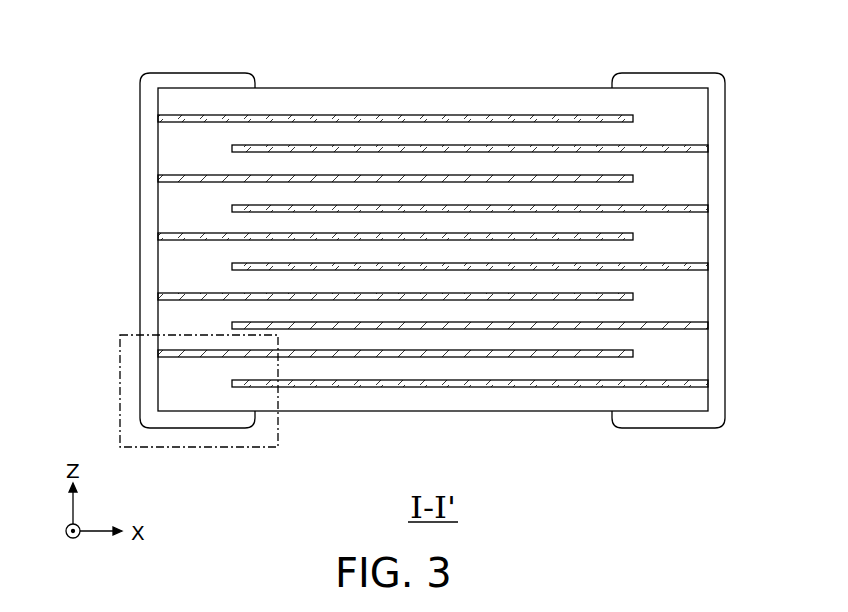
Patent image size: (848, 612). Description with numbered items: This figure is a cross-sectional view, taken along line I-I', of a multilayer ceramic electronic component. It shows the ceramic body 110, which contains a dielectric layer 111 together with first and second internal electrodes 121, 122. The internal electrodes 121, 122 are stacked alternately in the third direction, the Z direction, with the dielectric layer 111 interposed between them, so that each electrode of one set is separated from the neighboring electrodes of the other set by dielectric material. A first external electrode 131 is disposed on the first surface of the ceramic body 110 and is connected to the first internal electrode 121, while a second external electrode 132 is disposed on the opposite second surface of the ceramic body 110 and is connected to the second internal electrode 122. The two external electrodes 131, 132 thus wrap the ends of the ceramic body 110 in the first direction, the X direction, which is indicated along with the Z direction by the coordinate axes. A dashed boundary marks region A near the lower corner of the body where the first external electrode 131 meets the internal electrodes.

The ceramic body 110 is at (433, 245).
The dielectric layer 111 is at (513, 337).
The first internal electrode 121 is at (370, 325).
The second internal electrode 122 is at (410, 352).
The first external electrode 131 is at (197, 72).
The second external electrode 132 is at (668, 72).
The enlarged region A is at (120, 393).